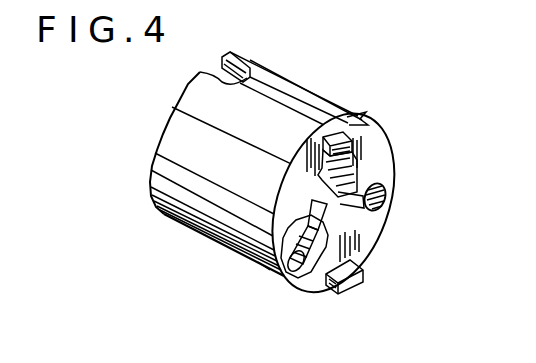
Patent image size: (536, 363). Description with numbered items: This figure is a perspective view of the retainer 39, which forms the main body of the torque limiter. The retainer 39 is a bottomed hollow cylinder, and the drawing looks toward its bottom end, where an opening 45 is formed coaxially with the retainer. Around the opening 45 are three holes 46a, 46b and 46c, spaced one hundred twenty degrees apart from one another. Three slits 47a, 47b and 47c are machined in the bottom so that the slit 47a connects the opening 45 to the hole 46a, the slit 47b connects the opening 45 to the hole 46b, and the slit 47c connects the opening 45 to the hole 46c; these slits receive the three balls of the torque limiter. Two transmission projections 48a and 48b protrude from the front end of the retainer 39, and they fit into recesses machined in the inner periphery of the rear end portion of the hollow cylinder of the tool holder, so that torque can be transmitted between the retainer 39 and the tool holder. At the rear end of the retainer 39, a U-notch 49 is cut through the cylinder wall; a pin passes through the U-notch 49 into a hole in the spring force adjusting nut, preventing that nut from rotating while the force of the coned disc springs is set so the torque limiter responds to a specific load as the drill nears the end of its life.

The retainer 39 is at (310, 102).
The opening 45 is at (360, 180).
The hole 46a is at (350, 148).
The hole 46b is at (386, 200).
The hole 46c is at (302, 284).
The slit 47a is at (356, 165).
The slit 47b is at (362, 232).
The slit 47c is at (258, 266).
The transmission projection 48a is at (366, 122).
The transmission projection 48b is at (363, 274).
The U-notch 49 is at (224, 58).